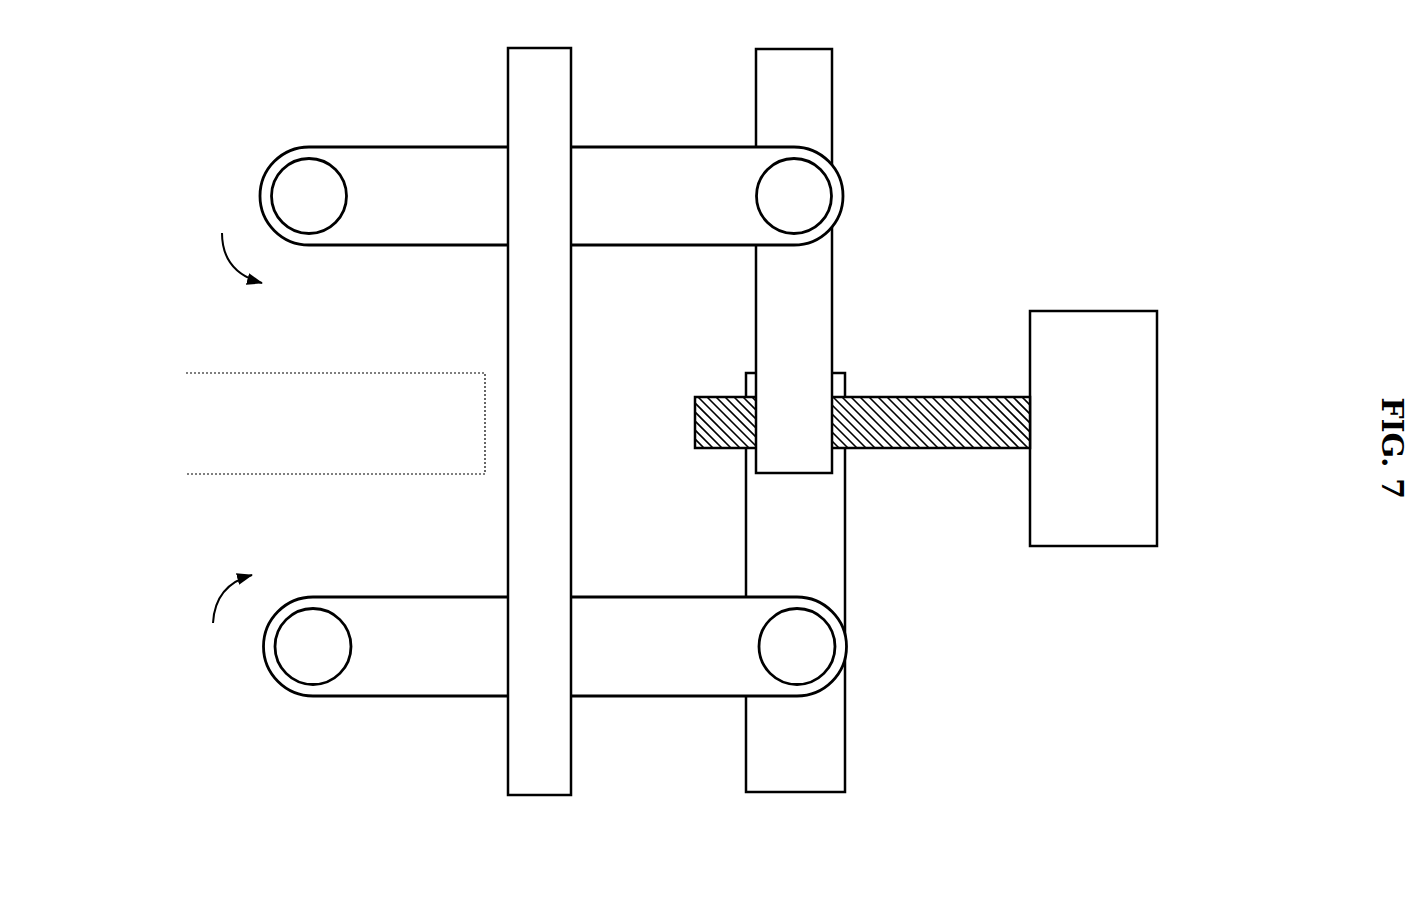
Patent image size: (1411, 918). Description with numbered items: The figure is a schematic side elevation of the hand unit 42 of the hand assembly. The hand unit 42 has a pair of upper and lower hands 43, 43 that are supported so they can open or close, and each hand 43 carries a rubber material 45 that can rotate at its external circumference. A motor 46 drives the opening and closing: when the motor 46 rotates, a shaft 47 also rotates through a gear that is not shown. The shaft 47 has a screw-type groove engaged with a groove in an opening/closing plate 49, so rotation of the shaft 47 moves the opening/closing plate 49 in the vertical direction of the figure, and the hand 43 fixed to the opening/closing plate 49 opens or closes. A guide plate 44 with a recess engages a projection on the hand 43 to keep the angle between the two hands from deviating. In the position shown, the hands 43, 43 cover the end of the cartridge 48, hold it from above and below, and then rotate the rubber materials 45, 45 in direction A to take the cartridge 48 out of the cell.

The hand unit 42 is at (1002, 150).
The hand 43 is at (480, 406).
The guide plate 44 is at (531, 282).
The rubber material 45 is at (466, 141).
The motor 46 is at (1119, 340).
The shaft 47 is at (920, 410).
The cartridge 48 is at (336, 435).
The opening/closing plate 49 is at (805, 323).